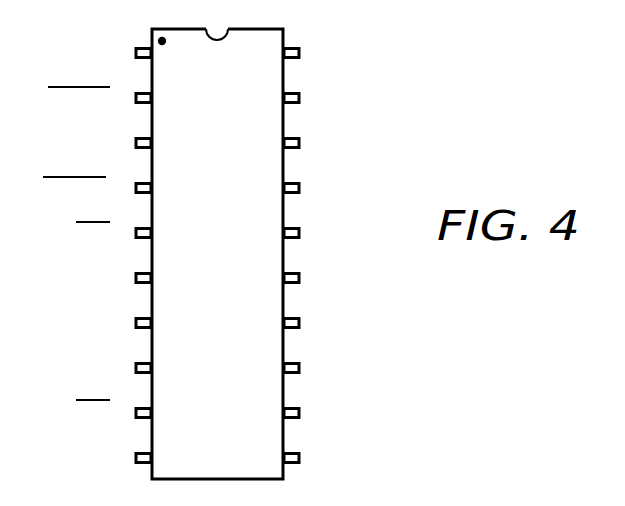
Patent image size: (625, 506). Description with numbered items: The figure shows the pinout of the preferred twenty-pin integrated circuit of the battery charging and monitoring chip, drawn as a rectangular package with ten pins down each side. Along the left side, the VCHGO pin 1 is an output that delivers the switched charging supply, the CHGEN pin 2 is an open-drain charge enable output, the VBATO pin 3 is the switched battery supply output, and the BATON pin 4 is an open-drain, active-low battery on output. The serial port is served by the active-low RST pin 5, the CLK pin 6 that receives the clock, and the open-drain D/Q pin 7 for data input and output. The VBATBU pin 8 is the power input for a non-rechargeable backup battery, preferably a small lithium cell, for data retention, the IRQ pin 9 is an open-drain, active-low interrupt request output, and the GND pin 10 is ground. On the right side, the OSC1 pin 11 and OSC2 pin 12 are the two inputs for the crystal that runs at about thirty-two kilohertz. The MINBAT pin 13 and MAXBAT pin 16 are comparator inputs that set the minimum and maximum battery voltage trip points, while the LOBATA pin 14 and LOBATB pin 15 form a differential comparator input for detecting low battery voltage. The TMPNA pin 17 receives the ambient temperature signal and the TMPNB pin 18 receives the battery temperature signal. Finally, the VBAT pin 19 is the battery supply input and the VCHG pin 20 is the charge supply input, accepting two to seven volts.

The VCHGO pin 1 is at (99, 43).
The CHGEN pin 2 is at (99, 88).
The VBATO pin 3 is at (101, 133).
The BATON pin 4 is at (97, 178).
The RST pin 5 is at (113, 223).
The CLK pin 6 is at (114, 268).
The D/Q pin 7 is at (110, 313).
The VBATBU pin 8 is at (94, 361).
The IRQ pin 9 is at (113, 403).
The GND pin 10 is at (110, 448).
The OSC1 pin 11 is at (328, 447).
The OSC2 pin 12 is at (330, 402).
The MINBAT pin 13 is at (342, 357).
The LOBATA pin 14 is at (341, 312).
The LOBATB pin 15 is at (340, 268).
The MAXBAT pin 16 is at (343, 223).
The TMPNA pin 17 is at (335, 178).
The TMPNB pin 18 is at (335, 133).
The VBAT pin 19 is at (330, 88).
The VCHG pin 20 is at (330, 42).